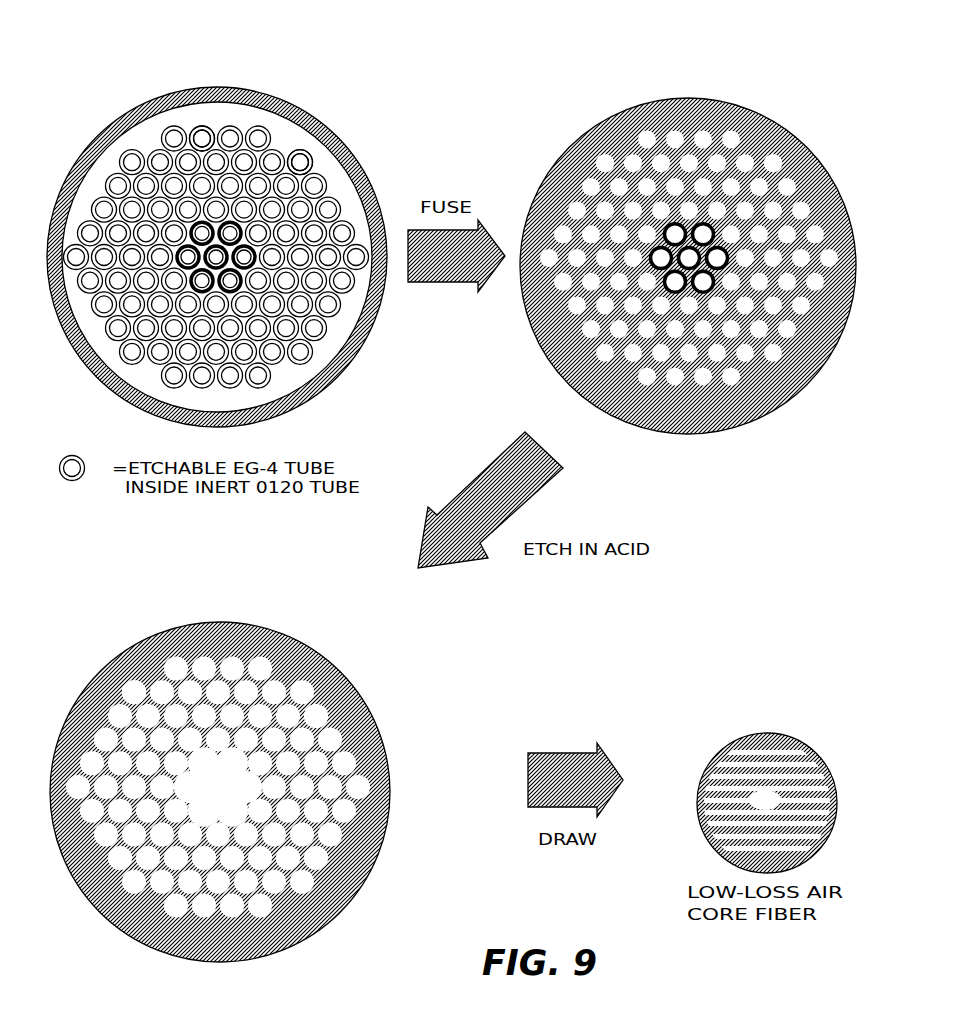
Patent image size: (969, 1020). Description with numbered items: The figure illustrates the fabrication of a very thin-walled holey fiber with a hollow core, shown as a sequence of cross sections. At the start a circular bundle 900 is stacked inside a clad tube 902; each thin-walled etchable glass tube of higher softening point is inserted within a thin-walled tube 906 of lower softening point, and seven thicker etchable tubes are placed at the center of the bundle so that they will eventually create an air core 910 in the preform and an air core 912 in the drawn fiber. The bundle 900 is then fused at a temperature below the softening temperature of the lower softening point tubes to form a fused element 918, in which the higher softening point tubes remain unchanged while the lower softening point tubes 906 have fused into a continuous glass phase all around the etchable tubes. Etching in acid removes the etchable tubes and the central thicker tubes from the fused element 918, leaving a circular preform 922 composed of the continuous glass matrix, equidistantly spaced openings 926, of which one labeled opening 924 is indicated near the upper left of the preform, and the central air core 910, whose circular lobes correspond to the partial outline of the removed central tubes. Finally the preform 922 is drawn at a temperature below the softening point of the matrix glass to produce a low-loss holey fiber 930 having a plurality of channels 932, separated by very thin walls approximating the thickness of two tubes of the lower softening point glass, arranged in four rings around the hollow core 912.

The circular bundle 900 is at (223, 213).
The clad tube 902 is at (120, 108).
The thin-walled tubes 906 is at (338, 383).
The air core 910 is at (222, 795).
The air core 912 is at (757, 795).
The fused element 918 is at (688, 236).
The circular preform 922 is at (244, 772).
The hole 924 is at (132, 690).
The equidistantly spaced openings 926 is at (388, 773).
The holey fiber 930 is at (758, 763).
The channels 932 is at (790, 738).